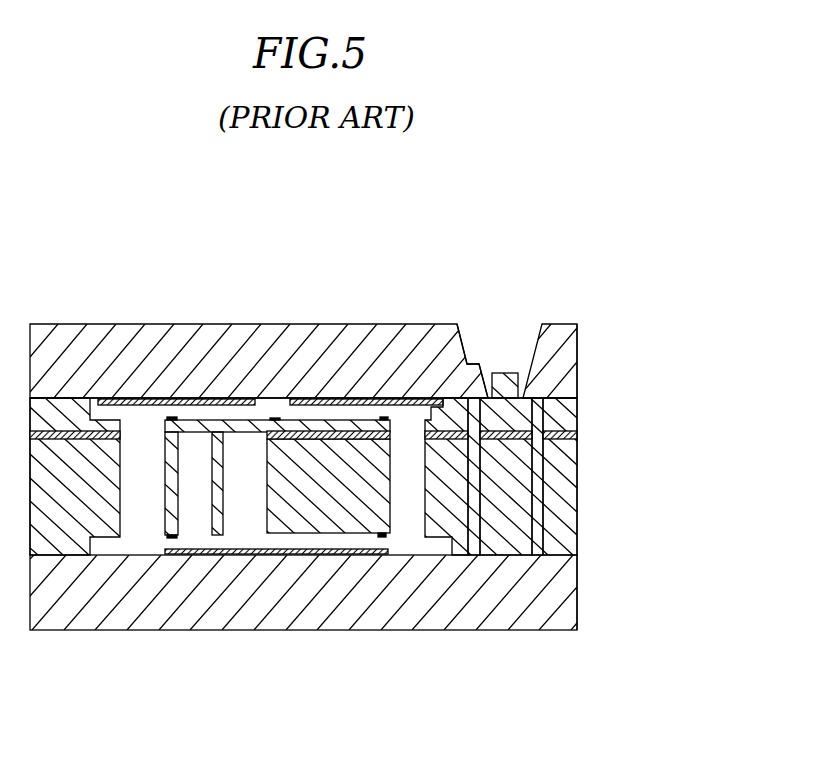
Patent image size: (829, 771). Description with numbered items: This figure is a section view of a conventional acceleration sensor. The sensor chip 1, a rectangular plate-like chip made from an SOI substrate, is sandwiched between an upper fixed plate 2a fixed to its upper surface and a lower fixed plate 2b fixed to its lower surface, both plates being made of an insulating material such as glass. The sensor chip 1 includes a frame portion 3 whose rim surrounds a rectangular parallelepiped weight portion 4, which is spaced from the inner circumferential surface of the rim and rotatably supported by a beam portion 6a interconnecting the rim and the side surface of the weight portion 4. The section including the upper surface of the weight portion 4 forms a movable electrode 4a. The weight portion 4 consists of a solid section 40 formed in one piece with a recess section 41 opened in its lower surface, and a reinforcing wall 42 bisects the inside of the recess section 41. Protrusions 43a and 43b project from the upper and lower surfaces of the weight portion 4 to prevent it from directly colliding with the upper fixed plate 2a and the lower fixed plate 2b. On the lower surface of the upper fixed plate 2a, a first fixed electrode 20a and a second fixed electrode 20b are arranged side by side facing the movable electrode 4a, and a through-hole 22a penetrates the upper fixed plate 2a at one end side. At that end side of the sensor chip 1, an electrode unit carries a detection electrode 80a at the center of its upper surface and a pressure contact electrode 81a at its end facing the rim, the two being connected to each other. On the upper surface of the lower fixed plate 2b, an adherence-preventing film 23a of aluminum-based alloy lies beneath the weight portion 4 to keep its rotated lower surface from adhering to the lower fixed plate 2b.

The sensor chip 1 is at (582, 513).
The upper fixed plate 2a is at (572, 366).
The lower fixed plate 2b is at (565, 587).
The frame portion 3 is at (565, 474).
The weight portion 4 is at (284, 481).
The movable electrode 4a is at (308, 420).
The beam portion 6a is at (273, 419).
The first fixed electrode 20a is at (118, 402).
The second fixed electrode 20b is at (343, 402).
The through-hole 22a is at (526, 315).
The adherence-preventing film 23a is at (262, 556).
The solid section 40 is at (312, 513).
The recess section 41 is at (193, 505).
The reinforcing wall 42 is at (217, 540).
The protrusion 43a is at (172, 417).
The protrusion 43b is at (168, 540).
The detection electrode 80a is at (505, 373).
The pressure contact electrode 81a is at (470, 398).